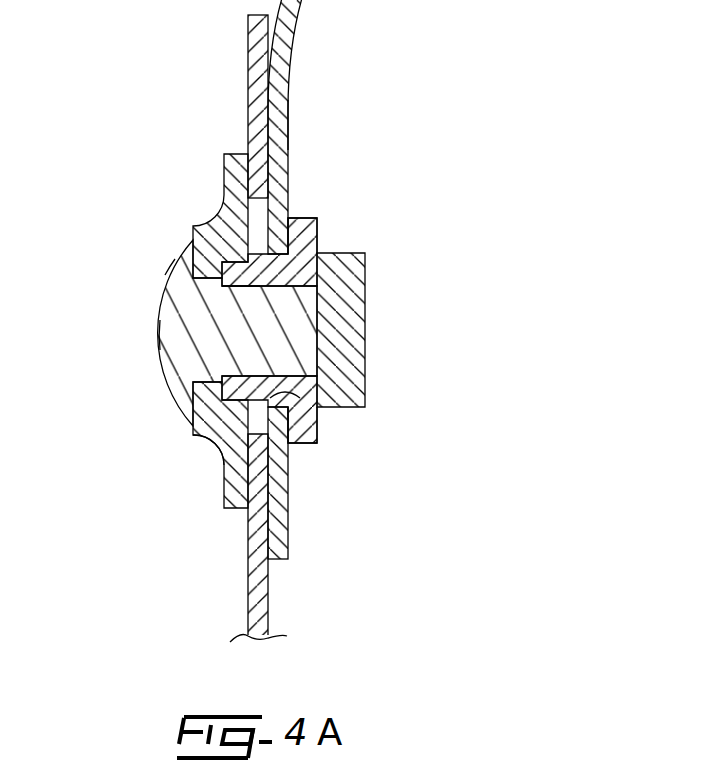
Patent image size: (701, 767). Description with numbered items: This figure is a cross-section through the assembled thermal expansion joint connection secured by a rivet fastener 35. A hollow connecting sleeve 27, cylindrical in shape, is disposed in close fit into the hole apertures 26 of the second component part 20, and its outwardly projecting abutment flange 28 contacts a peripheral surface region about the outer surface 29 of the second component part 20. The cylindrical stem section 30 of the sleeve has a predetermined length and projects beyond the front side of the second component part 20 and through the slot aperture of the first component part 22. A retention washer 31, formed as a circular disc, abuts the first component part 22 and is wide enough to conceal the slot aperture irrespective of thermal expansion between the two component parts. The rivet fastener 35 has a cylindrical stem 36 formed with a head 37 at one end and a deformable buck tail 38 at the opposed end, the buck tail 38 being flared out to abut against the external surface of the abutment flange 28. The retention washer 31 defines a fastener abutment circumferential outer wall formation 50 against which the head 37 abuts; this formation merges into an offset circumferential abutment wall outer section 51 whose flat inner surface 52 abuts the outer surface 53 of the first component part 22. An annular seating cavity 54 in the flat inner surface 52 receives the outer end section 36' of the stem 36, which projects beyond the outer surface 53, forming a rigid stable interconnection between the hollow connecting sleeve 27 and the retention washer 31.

The second component part 20 is at (288, 100).
The first component part 22 is at (248, 542).
The hole apertures 26 is at (317, 443).
The hollow connecting sleeve 27 is at (289, 252).
The abutment flange 28 is at (303, 265).
The outer surface 29 is at (288, 126).
The cylindrical stem section 30 is at (292, 400).
The retention washer 31 is at (217, 458).
The rivet fastener 35 is at (192, 331).
The cylindrical stem 36 is at (153, 371).
The outer end section 36' is at (147, 288).
The head 37 is at (176, 274).
The deformable buck tail 38 is at (335, 377).
The fastener abutment circumferential outer wall formation 50 is at (210, 395).
The offset circumferential abutment wall outer section 51 is at (222, 178).
The flat inner surface 52 is at (258, 158).
The outer surface 53 is at (247, 606).
The annular seating cavity 54 is at (248, 400).